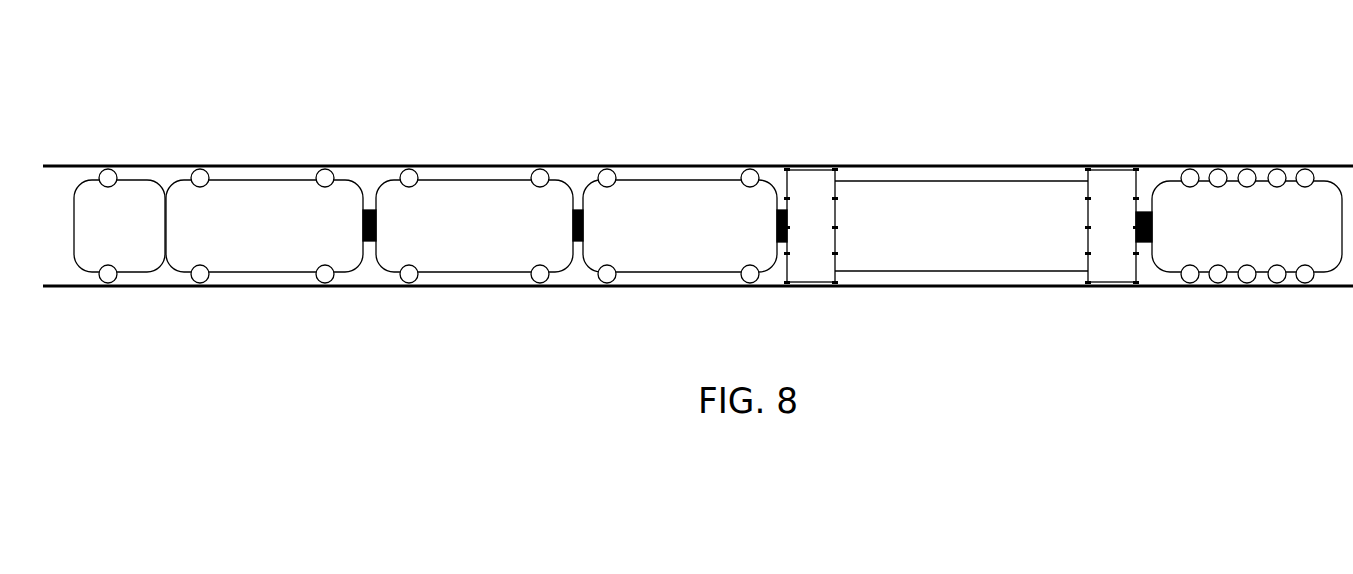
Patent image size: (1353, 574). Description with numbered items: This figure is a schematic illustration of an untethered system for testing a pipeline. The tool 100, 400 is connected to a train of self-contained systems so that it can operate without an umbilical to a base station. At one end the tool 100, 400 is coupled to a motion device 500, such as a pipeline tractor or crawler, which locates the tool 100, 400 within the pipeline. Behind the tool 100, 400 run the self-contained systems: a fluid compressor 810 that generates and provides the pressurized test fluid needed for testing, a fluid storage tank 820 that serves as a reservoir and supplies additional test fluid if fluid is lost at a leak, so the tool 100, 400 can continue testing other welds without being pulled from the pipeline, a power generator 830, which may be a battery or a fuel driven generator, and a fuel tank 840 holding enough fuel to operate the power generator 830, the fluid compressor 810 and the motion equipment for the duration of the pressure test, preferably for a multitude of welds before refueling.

The tool 100 is at (961, 193).
The tool 400 is at (937, 190).
The motion device 500 is at (1252, 200).
The fluid compressor 810 is at (678, 198).
The fluid storage tank 820 is at (472, 198).
The power generator 830 is at (255, 198).
The fuel tank 840 is at (126, 198).